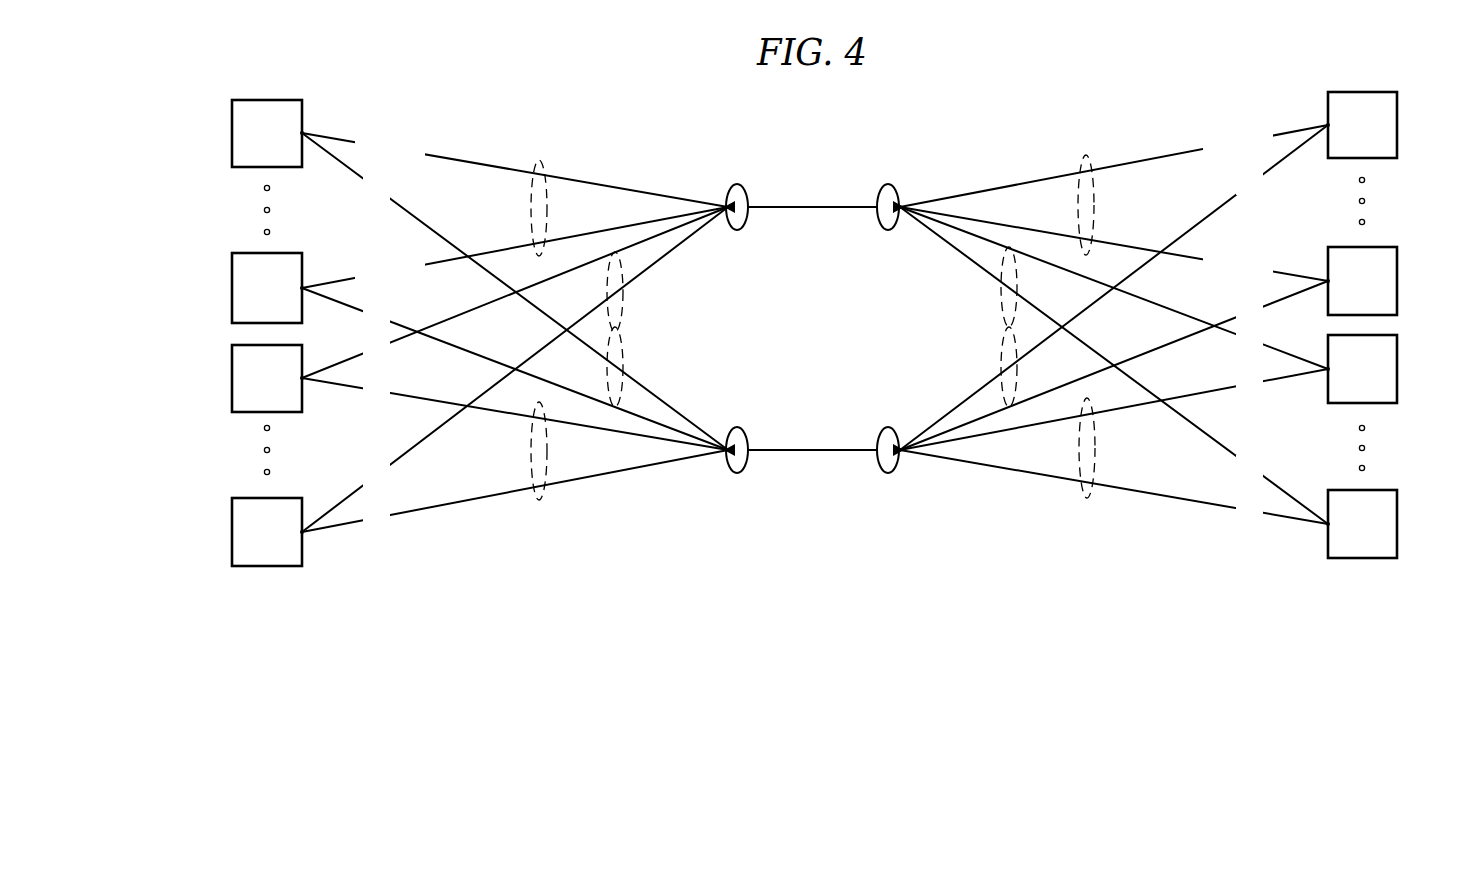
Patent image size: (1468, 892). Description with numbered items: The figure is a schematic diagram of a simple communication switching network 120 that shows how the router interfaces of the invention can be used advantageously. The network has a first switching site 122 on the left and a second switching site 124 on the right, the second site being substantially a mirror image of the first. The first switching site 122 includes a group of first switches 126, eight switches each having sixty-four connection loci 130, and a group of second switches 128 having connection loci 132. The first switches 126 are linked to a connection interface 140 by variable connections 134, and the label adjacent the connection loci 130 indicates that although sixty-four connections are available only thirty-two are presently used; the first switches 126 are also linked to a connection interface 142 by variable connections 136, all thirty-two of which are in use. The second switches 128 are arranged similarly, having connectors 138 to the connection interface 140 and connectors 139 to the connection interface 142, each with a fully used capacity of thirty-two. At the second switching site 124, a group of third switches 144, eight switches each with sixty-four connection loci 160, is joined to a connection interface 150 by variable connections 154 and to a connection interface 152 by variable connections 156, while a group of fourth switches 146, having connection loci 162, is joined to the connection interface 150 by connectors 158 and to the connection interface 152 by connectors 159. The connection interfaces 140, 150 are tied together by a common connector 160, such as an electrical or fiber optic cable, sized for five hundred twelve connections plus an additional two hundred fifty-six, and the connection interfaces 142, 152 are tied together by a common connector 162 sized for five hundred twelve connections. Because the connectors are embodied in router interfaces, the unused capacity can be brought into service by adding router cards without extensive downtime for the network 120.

The communication switching network 120 is at (596, 68).
The first switching site 122 is at (247, 88).
The second switching site 124 is at (1380, 82).
The first switches 126 is at (232, 132).
The second switches 128 is at (232, 380).
The connection loci 130 is at (304, 132).
The connection loci 132 is at (305, 380).
The variable connections 134 is at (539, 160).
The variable connections 136 is at (615, 407).
The connectors 138 is at (615, 252).
The connectors 139 is at (539, 500).
The connection interface 140 is at (731, 186).
The connection interface 142 is at (732, 472).
The third switches 144 is at (1398, 118).
The fourth switches 146 is at (1398, 372).
The connection interface 150 is at (893, 186).
The connection interface 152 is at (893, 472).
The variable connections 154 is at (1086, 155).
The variable connections 156 is at (1009, 407).
The connectors 158 is at (1009, 247).
The connectors 159 is at (1087, 498).
The common connector / connection loci 160 is at (1326, 126).
The common connector / connection loci 162 is at (1326, 372).